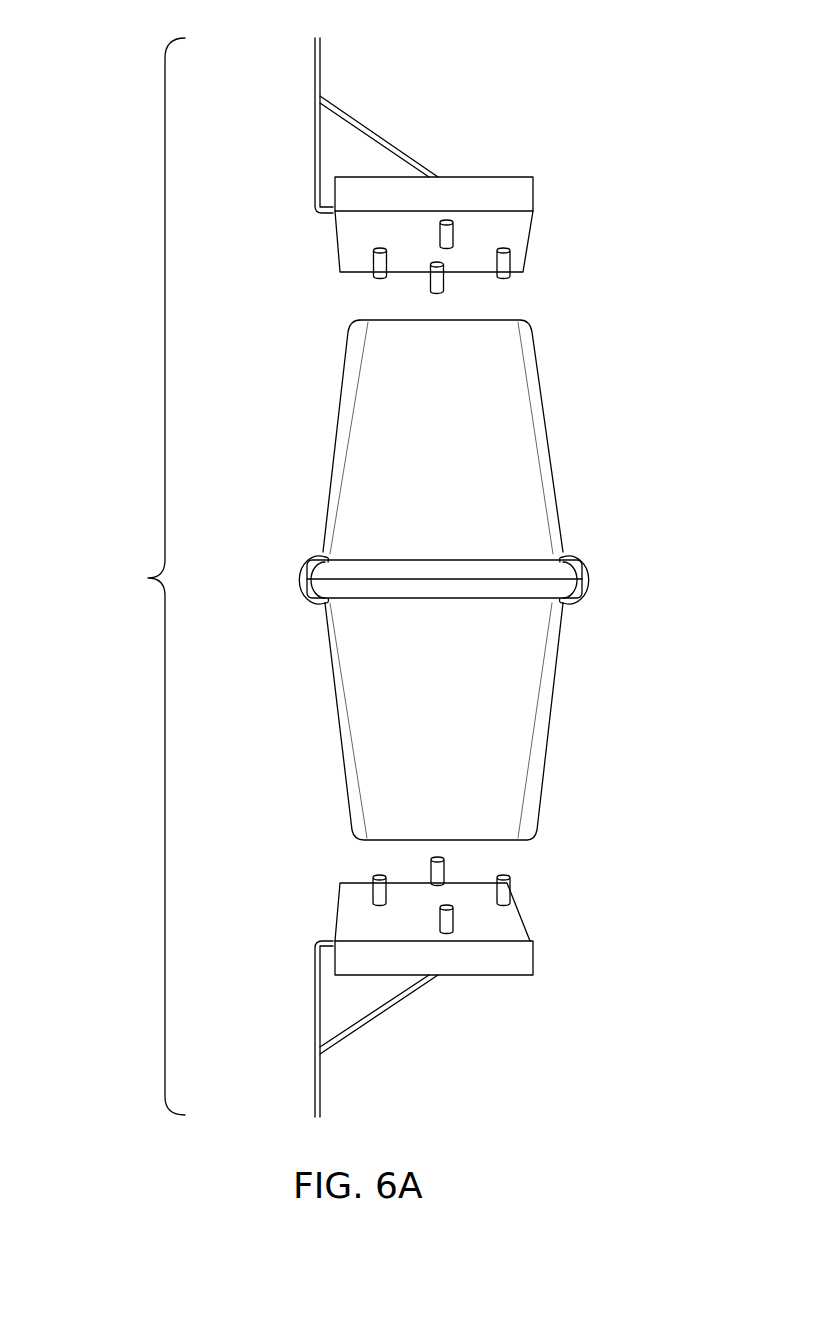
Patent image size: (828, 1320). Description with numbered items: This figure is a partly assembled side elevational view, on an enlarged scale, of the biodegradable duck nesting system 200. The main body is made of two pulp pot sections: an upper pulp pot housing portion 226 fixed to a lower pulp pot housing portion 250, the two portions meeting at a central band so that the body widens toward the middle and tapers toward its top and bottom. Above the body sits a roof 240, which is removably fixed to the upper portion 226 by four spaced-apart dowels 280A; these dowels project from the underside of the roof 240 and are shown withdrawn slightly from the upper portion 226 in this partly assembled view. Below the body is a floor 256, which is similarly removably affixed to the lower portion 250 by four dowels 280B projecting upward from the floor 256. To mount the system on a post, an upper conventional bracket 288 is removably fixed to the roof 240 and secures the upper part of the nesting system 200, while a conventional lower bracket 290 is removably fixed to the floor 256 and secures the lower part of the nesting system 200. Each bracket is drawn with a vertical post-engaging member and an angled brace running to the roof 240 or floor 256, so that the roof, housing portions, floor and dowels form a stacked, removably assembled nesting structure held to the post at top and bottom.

The biodegradable duck nesting system 200 is at (142, 576).
The upper conventional bracket 288 is at (375, 121).
The roof 240 is at (533, 195).
The dowels 280A is at (444, 280).
The upper pulp pot housing portion 226 is at (458, 458).
The lower pulp pot housing portion 250 is at (553, 695).
The dowels 280B is at (444, 872).
The floor 256 is at (533, 962).
The conventional lower bracket 290 is at (387, 1020).